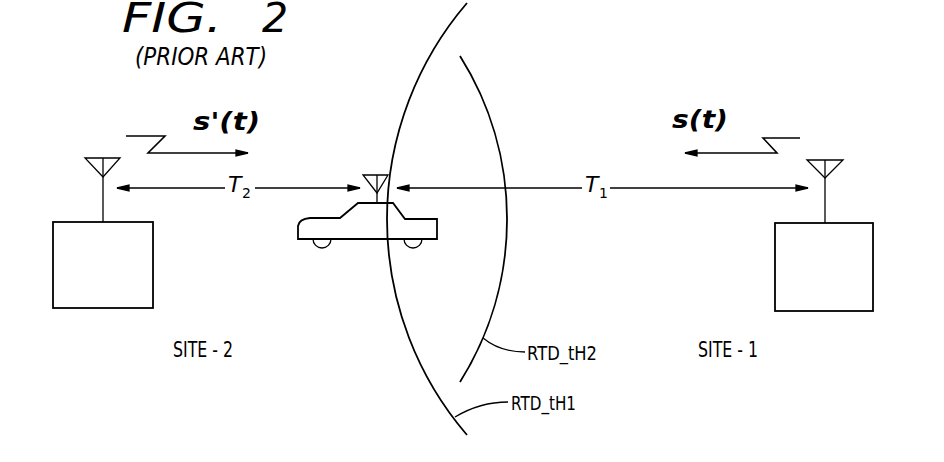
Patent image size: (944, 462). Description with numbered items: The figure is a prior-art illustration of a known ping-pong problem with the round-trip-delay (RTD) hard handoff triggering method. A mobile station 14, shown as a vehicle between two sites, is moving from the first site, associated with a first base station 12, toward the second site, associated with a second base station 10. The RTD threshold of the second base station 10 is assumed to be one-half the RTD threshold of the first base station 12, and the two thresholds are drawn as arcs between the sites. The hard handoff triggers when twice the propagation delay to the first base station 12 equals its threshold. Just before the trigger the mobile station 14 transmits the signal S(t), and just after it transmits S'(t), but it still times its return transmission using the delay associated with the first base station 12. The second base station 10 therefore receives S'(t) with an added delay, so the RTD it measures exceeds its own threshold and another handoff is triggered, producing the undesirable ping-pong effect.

The second base station 10 is at (118, 292).
The first base station 12 is at (839, 293).
The mobile station 14 is at (322, 248).